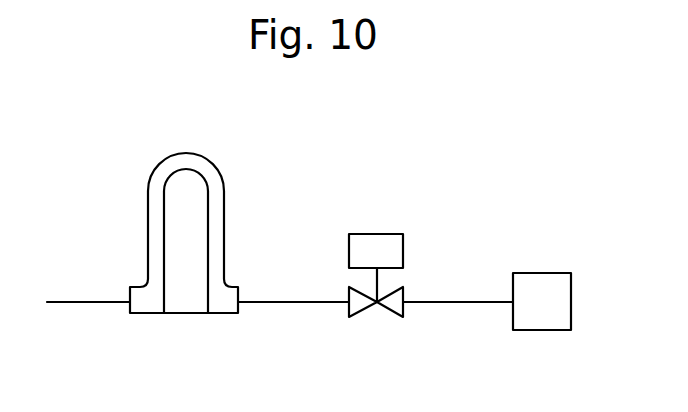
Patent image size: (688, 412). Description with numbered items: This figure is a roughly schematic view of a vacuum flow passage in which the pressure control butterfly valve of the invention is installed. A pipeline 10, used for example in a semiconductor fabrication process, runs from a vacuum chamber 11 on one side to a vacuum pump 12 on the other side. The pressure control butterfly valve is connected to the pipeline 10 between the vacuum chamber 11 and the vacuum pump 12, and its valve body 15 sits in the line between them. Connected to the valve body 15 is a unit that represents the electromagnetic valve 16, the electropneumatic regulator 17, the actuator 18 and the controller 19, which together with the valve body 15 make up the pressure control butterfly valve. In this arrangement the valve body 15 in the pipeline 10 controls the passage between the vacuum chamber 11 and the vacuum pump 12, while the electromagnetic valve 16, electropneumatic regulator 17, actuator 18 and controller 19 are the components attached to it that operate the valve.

The pipeline 10 is at (99, 303).
The vacuum chamber 11 is at (182, 160).
The vacuum pump 12 is at (542, 280).
The valve body 15 is at (393, 305).
The actuator 18 is at (380, 242).
The electromagnetic valve 16 is at (361, 243).
The electropneumatic regulator 17 is at (361, 243).
The controller 19 is at (361, 243).